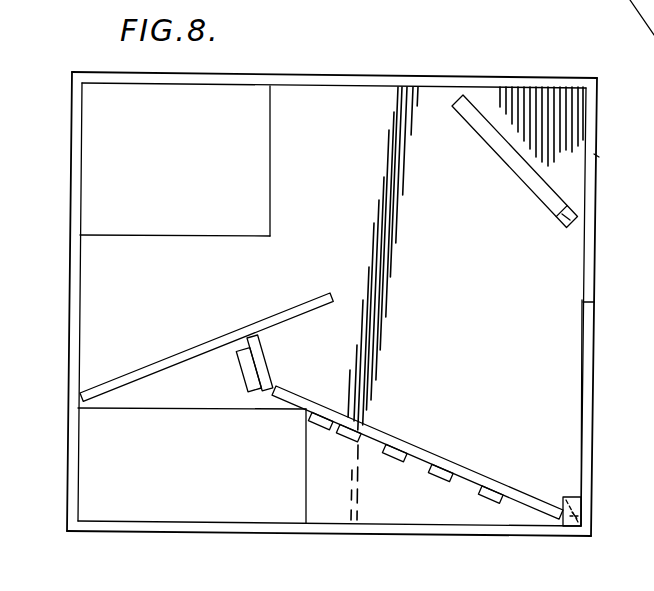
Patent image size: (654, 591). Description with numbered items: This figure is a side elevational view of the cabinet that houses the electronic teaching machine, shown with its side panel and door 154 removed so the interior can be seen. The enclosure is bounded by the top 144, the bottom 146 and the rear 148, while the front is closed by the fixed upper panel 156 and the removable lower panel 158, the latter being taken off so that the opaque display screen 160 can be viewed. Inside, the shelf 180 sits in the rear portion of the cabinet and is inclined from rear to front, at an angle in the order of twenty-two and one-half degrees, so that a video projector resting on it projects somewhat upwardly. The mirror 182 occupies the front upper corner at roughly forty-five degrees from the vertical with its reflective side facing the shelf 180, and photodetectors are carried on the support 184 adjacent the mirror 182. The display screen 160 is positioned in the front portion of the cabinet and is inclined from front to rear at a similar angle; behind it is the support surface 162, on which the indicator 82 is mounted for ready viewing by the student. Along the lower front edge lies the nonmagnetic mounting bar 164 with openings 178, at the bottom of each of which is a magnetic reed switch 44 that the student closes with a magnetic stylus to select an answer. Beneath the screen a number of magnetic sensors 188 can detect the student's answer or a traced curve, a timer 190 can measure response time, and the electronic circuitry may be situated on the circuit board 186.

The top 144 is at (228, 82).
The bottom 146 is at (283, 532).
The rear 148 is at (80, 153).
The door 154 is at (653, 25).
The panel 156 is at (598, 157).
The panel 158 is at (585, 398).
The display screen 160 is at (427, 456).
The support surface 162 is at (268, 363).
The mounting bar 164 is at (562, 505).
The openings 178 is at (576, 497).
The shelf 180 is at (193, 348).
The mirror 182 is at (487, 144).
The support 184 is at (560, 218).
The circuit board 186 is at (195, 425).
The magnetic sensors 188 is at (347, 442).
The timer 190 is at (323, 437).
The indicator 82 is at (243, 367).
The magnetic reed switch 44 is at (580, 516).